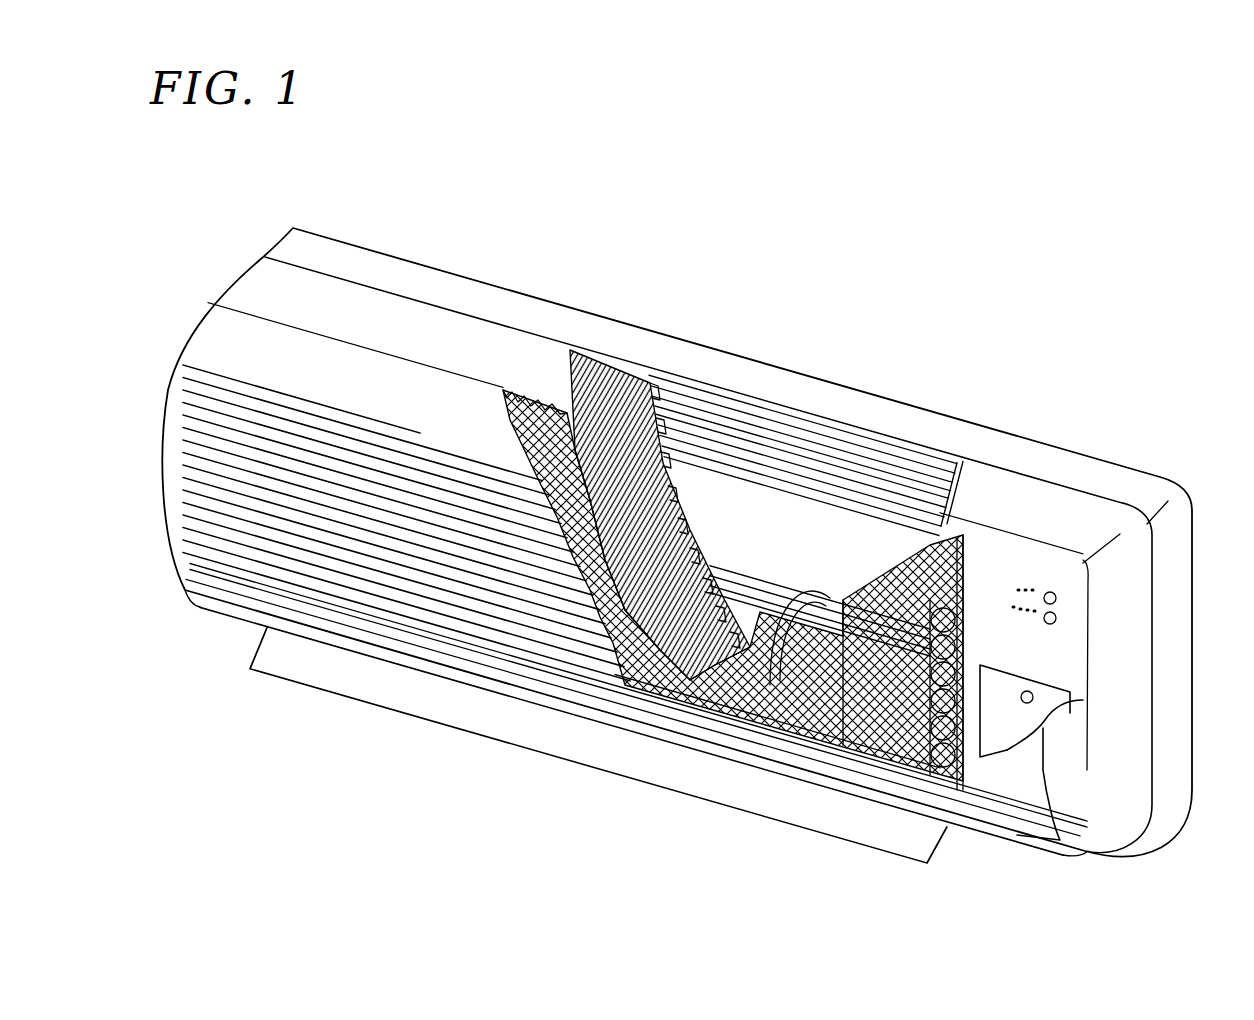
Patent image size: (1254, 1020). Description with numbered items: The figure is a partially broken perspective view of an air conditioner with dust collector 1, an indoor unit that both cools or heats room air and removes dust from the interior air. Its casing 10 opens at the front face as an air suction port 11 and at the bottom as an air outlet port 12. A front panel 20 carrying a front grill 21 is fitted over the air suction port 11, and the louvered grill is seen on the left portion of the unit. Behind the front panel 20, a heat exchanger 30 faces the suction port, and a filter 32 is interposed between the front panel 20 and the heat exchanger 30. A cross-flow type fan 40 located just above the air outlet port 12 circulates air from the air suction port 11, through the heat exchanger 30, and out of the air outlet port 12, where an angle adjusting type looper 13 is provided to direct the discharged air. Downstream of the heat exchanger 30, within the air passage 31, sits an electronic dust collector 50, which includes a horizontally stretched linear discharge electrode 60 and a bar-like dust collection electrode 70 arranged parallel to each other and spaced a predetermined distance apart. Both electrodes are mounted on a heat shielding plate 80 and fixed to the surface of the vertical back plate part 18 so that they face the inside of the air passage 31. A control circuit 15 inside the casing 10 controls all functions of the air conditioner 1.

The air conditioner with dust collector 1 is at (397, 171).
The casing 10 is at (787, 374).
The air suction port 11 is at (643, 693).
The air outlet port 12 is at (833, 788).
The angle adjusting type looper 13 is at (930, 842).
The control circuit 15 is at (1057, 697).
The vertical back plate part 18 is at (723, 403).
The front panel 20 is at (385, 636).
The front grill 21 is at (460, 607).
The heat exchanger 30 is at (595, 648).
The air passage 31 is at (903, 662).
The filter 32 is at (783, 717).
The cross-flow type fan 40 is at (752, 700).
The electronic dust collector 50 is at (863, 437).
The discharge electrode 60 is at (883, 497).
The dust collection electrode 70 is at (920, 520).
The heat shielding plate 80 is at (807, 436).